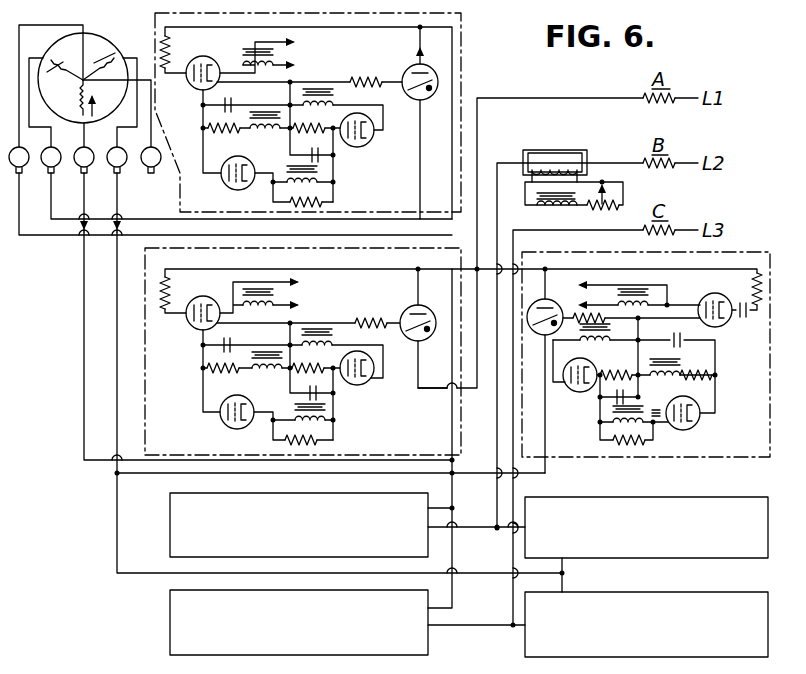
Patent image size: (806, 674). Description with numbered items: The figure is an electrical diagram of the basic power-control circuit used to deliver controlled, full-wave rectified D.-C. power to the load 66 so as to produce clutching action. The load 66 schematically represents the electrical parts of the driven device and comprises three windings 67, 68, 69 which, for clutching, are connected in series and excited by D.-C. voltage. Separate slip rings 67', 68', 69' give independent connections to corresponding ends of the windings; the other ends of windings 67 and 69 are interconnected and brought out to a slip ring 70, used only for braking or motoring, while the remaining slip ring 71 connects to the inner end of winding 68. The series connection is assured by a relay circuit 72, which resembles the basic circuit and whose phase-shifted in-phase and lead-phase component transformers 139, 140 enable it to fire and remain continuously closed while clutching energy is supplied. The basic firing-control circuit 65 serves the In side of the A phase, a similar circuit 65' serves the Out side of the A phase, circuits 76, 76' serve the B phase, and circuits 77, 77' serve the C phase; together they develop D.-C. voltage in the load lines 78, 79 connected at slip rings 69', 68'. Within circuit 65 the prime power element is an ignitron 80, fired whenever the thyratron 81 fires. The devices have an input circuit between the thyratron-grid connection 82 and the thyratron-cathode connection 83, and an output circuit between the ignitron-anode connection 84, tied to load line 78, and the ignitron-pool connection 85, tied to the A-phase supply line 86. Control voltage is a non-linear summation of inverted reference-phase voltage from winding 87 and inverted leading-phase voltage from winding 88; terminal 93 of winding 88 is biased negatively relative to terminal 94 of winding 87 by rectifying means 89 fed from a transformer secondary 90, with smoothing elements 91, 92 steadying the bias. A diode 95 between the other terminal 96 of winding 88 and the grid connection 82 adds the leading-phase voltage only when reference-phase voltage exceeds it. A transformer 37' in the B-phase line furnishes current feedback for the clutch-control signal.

The load 66 is at (101, 33).
The winding 67 is at (65, 57).
The winding 68 is at (103, 77).
The winding 69 is at (73, 98).
The slip ring 71 is at (226, 130).
The slip ring 67' is at (239, 138).
The slip ring 69' is at (76, 177).
The slip ring 68' is at (114, 145).
The slip ring 70 is at (153, 173).
The relay circuit 72 is at (465, 71).
The in-phase component transformer 139 is at (276, 132).
The lead-phase component transformer 140 is at (298, 168).
The A-phase supply line 86 is at (669, 100).
The transformer 37' is at (582, 169).
The control circuit 65 is at (249, 351).
The control circuit 65' is at (646, 337).
The load line 78 is at (84, 342).
The load line 79 is at (117, 373).
The thyratron 81 is at (194, 298).
The thyratron-grid connection 82 is at (200, 336).
The thyratron-cathode connection 83 is at (236, 345).
The winding 87 is at (241, 374).
The terminal 94 is at (267, 374).
The smoothing element 91 is at (311, 373).
The smoothing element 92 is at (335, 394).
The terminal 93 is at (336, 420).
The winding 88 is at (318, 436).
The rectifying means 89 is at (370, 386).
The transformer secondary 90 is at (335, 345).
The ignitron 80 is at (401, 311).
The ignitron-anode connection 84 is at (418, 296).
The ignitron-pool connection 85 is at (419, 360).
The diode 95 is at (223, 421).
The terminal 96 is at (270, 424).
The control circuit 76 is at (281, 525).
The control circuit 77 is at (275, 622).
The control circuit 76' is at (646, 509).
The control circuit 77' is at (646, 612).